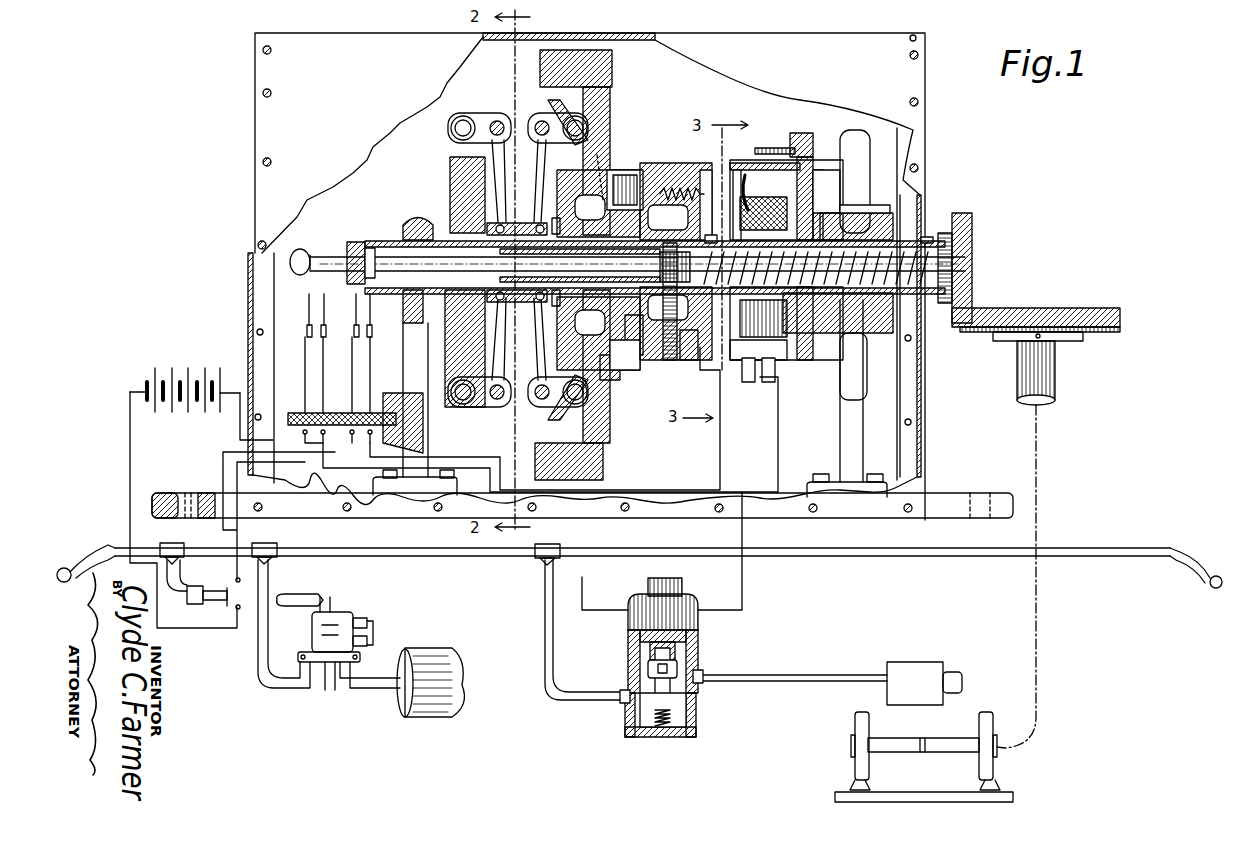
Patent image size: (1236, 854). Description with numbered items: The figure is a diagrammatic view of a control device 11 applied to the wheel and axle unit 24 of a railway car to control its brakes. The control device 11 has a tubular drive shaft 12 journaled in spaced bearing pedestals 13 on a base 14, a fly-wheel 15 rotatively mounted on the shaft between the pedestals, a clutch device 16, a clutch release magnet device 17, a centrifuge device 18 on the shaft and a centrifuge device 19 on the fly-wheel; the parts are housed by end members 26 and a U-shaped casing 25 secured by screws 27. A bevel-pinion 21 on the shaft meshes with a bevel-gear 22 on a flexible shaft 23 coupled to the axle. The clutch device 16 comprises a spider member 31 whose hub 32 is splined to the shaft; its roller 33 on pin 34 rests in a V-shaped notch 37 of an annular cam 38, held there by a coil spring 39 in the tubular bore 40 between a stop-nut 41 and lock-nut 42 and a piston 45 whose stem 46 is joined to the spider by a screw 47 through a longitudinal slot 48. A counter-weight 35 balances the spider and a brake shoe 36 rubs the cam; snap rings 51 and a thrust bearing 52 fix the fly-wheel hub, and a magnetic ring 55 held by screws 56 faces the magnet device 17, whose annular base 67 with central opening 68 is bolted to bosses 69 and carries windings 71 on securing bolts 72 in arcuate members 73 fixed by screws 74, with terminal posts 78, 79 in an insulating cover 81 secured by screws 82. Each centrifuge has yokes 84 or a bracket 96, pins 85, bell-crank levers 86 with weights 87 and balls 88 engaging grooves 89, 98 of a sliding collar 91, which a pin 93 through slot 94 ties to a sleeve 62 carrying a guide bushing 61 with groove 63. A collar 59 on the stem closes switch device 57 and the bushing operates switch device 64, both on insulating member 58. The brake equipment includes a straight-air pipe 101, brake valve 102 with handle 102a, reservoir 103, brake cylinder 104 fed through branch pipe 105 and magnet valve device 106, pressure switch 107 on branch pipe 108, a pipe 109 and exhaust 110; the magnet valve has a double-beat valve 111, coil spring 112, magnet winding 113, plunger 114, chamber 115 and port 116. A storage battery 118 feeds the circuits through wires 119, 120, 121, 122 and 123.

The control device 11 is at (246, 117).
The tubular drive shaft 12 is at (928, 237).
The bearing pedestals 13 is at (410, 408).
The base 14 is at (930, 508).
The fly-wheel 15 is at (612, 72).
The clutch device 16 is at (649, 163).
The clutch release magnet device 17 is at (768, 157).
The centrifuge device 18 is at (447, 193).
The centrifuge device 19 is at (594, 405).
The bevel-pinion 21 is at (970, 262).
The bevel-gear 22 is at (1030, 310).
The shaft 23 is at (1050, 381).
The wheel and axle unit 24 is at (943, 748).
The U-shaped casing 25 is at (365, 48).
The end members 26 is at (256, 300).
The screws 27 is at (920, 106).
The spider member 31 is at (678, 170).
The central hub 32 is at (622, 203).
The roller 33 is at (635, 168).
The pin 34 is at (598, 203).
The counter-weight 35 is at (625, 365).
The brake shoe 36 is at (598, 333).
The V-shaped notch 37 is at (597, 169).
The annular cam 38 is at (592, 360).
The coil spring 39 is at (812, 293).
The tubular bore 40 is at (600, 248).
The stop-nut 41 is at (855, 240).
The lock-nut 42 is at (870, 235).
The piston 45 is at (712, 235).
The stem 46 is at (555, 280).
The screw 47 is at (660, 365).
The longitudinal slot 48 is at (660, 280).
The snap rings 51 is at (600, 322).
The thrust bearing 52 is at (550, 216).
The ring 55 is at (684, 362).
The screws 56 is at (690, 190).
The switch device 57 is at (318, 322).
The insulating member 58 is at (290, 413).
The collar 59 is at (305, 248).
The guide bushing 61 is at (372, 248).
The sleeve 62 is at (390, 245).
The annular groove 63 is at (356, 246).
The switch device 64 is at (368, 322).
The annular base 67 is at (805, 133).
The central opening 68 is at (818, 240).
The bosses 69 is at (845, 140).
The electro-magnet windings 71 is at (775, 205).
The securing bolt 72 is at (743, 192).
The arcuate members 73 is at (812, 230).
The screws 74 is at (825, 205).
The terminal post 78 is at (748, 382).
The terminal post 79 is at (770, 382).
The insulating cover 81 is at (739, 191).
The screws 82 is at (792, 405).
The yokes 84 is at (448, 148).
The pin 85 is at (497, 120).
The bell-crank lever 86 is at (538, 163).
The weight 87 is at (462, 122).
The ball 88 is at (517, 251).
The annular groove 89 is at (492, 310).
The sliding collar 91 is at (493, 216).
The pin 93 is at (545, 245).
The slot 94 is at (546, 222).
The bracket 96 is at (548, 125).
The annular groove 98 is at (527, 310).
The straight-air pipe 101 is at (385, 550).
The brake valve 102 is at (358, 616).
The valve handle 102a is at (302, 595).
The reservoir 103 is at (432, 652).
The brake cylinder 104 is at (910, 659).
The branch pipe 105 is at (545, 605).
The magnet valve device 106 is at (640, 590).
The fluid pressure operated switch 107 is at (203, 586).
The branch pipe 108 is at (175, 598).
The pipe 109 is at (258, 661).
The exhaust 110 is at (329, 692).
The double-beat valve 111 is at (697, 665).
The coil spring 112 is at (655, 727).
The magnet winding 113 is at (632, 620).
The plunger 114 is at (630, 642).
The chamber 115 is at (697, 632).
The port 116 is at (697, 645).
The storage battery 118 is at (211, 356).
The wire 119 is at (240, 434).
The wire 120 is at (223, 488).
The wire 121 is at (322, 470).
The wire 122 is at (130, 455).
The wire 123 is at (470, 457).